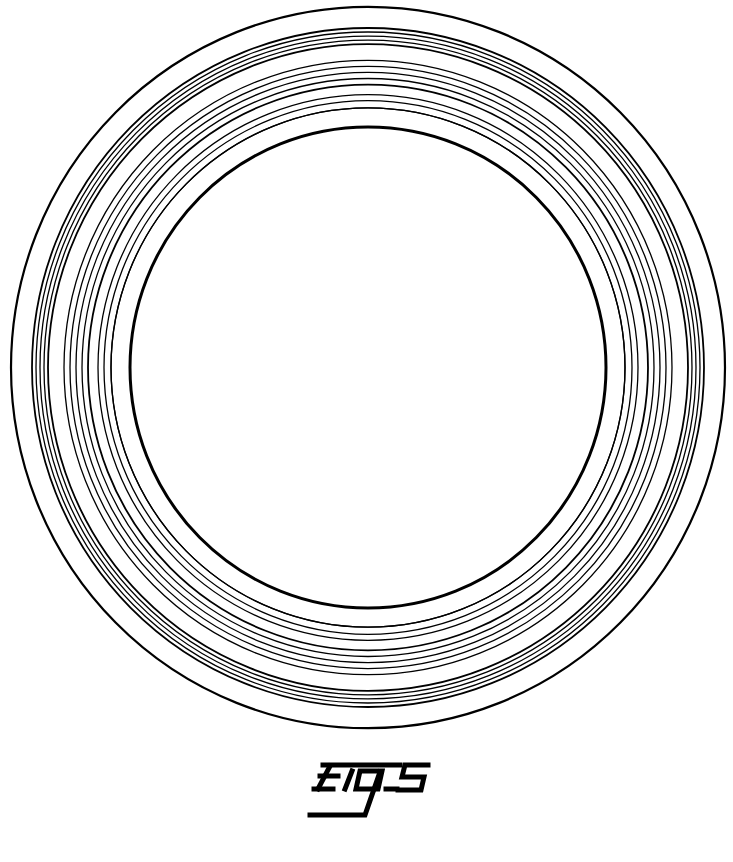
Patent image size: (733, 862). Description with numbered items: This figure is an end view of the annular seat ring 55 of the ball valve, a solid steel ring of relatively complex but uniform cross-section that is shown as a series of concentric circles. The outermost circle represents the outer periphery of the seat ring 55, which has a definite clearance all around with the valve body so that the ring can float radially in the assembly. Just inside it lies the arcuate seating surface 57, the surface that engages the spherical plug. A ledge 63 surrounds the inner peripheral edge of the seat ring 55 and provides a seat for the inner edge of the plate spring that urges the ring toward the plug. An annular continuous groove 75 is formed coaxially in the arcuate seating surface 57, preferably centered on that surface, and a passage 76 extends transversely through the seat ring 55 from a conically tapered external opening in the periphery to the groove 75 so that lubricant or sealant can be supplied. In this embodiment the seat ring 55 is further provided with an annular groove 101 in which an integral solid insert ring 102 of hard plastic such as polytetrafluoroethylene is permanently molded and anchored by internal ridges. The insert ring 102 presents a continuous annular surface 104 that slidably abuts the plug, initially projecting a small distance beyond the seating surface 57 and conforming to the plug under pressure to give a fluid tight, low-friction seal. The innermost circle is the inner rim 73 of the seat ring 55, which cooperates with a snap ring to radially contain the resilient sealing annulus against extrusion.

The seat ring 55 is at (500, 77).
The ledge 63 is at (560, 70).
The arcuate seating surface 57 is at (573, 150).
The passage 76 is at (366, 98).
The insert ring 102 is at (437, 133).
The annular continuous groove 75 is at (273, 112).
The continuous annular surface 104 is at (230, 148).
The annular groove 101 is at (196, 168).
The inner rim 73 is at (182, 222).